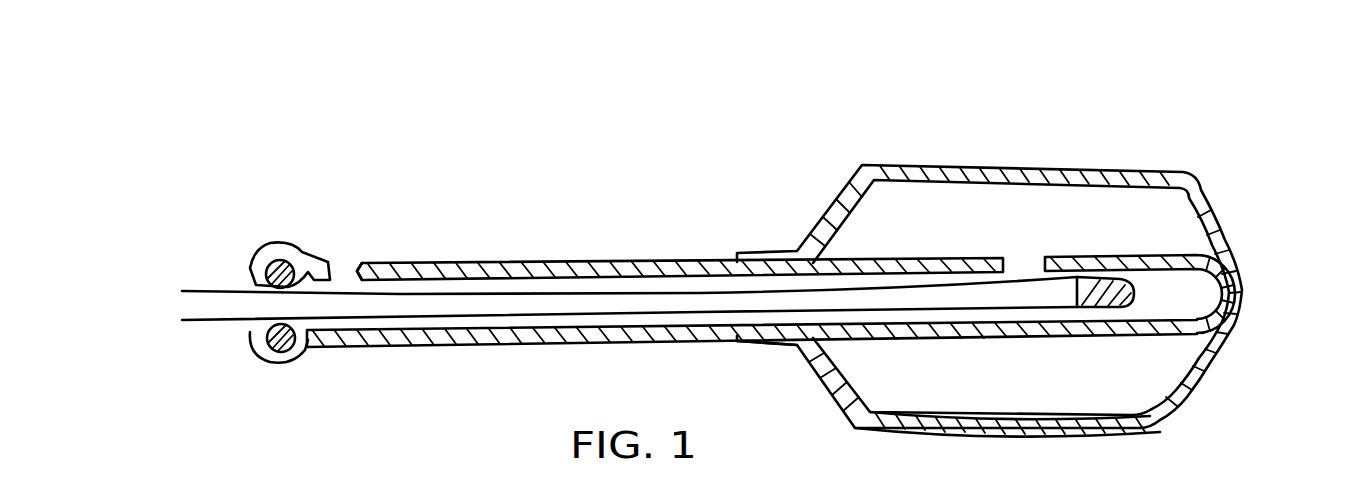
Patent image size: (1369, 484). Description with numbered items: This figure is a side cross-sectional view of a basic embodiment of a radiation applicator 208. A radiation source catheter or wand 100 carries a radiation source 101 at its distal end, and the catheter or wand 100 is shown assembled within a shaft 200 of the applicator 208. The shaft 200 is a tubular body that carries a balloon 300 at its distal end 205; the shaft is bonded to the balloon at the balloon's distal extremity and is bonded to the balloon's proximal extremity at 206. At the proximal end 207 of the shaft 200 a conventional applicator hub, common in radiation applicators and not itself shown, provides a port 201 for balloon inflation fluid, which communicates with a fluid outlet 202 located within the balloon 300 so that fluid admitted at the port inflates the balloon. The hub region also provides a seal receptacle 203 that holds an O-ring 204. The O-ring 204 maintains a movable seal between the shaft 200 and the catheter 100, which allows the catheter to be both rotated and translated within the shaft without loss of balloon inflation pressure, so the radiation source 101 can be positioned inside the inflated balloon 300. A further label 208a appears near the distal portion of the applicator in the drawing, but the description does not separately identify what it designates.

The radiation source catheter or wand 100 is at (505, 370).
The radiation source 101 is at (1147, 260).
The shaft 200 is at (630, 265).
The port 201 is at (347, 250).
The fluid outlet 202 is at (1017, 267).
The seal receptacle 203 is at (260, 258).
The O-ring 204 is at (260, 290).
The distal end 205 is at (1243, 277).
The balloon proximal extremity bond 206 is at (768, 345).
The proximal end 207 is at (317, 350).
The applicator 208 is at (593, 137).
The distal portion of assembly 208a is at (1127, 483).
The balloon 300 is at (1017, 163).